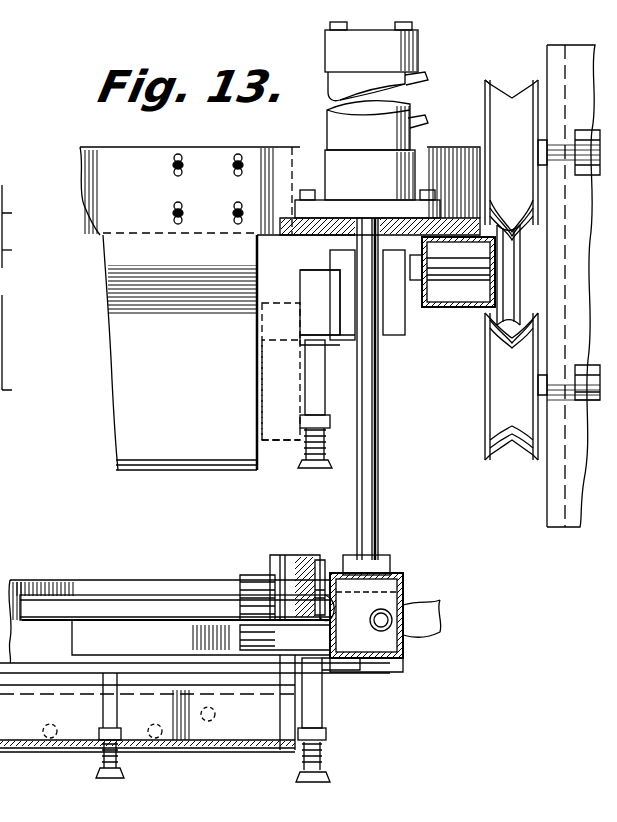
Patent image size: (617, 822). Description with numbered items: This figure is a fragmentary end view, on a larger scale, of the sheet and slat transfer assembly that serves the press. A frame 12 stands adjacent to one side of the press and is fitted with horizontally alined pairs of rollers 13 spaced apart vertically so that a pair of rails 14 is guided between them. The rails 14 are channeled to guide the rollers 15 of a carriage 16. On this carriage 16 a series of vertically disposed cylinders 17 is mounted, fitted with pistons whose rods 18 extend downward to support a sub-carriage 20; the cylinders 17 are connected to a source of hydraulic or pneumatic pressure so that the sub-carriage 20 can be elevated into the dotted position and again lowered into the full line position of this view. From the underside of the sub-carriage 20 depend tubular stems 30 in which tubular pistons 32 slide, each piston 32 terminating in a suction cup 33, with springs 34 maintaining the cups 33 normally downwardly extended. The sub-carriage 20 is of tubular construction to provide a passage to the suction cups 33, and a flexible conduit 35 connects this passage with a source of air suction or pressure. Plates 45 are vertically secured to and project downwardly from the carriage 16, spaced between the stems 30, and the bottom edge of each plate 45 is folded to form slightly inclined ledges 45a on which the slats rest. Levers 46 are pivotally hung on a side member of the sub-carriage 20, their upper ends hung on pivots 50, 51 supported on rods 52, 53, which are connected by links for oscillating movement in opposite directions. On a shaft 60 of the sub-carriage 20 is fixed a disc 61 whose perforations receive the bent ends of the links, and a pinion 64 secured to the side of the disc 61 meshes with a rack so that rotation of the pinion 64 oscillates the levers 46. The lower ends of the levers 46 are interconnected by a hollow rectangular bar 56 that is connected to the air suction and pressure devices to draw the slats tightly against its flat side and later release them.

The frame 12 is at (530, 496).
The rollers 13 is at (498, 98).
The rails 14 is at (545, 280).
The rollers 15 is at (500, 320).
The carriage 16 is at (455, 308).
The cylinders 17 is at (418, 62).
The rods 18 is at (380, 445).
The sub-carriage 20 is at (375, 345).
The tubular stems 30 is at (338, 378).
The tubular pistons 32 is at (330, 435).
The suction cup 33 is at (312, 470).
The springs 34 is at (326, 445).
The flexible conduit 35 is at (452, 620).
The plates 45 is at (124, 424).
The ledges 45a is at (180, 472).
The levers 46 is at (296, 330).
The pivots 50 is at (262, 575).
The pivots 51 is at (285, 637).
The rods 52 is at (320, 560).
The rods 53 is at (333, 606).
The hollow rectangular bars 56 is at (275, 442).
The shaft 60 is at (180, 572).
The disc 61 is at (20, 226).
The pinion 64 is at (256, 564).